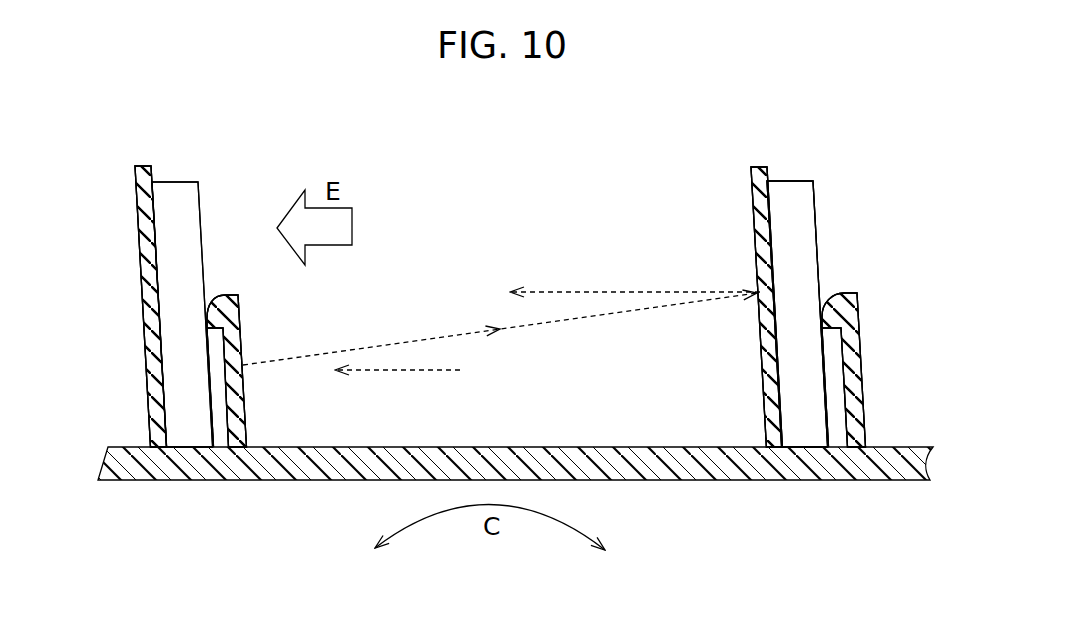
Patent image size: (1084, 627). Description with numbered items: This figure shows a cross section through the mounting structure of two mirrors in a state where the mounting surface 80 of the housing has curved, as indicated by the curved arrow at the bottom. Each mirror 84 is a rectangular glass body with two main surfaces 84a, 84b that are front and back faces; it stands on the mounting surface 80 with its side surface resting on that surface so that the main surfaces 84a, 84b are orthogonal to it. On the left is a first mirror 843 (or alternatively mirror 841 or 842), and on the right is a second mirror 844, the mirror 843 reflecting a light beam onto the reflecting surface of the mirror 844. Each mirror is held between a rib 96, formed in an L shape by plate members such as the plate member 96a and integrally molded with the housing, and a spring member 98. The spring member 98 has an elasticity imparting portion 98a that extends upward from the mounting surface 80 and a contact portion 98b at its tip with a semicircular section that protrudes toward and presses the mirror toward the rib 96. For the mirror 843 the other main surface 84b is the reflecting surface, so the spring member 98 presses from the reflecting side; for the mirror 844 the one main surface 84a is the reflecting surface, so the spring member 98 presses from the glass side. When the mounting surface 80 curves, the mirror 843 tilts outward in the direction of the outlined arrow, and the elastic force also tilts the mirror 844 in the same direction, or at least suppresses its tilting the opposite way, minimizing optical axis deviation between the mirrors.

The mounting surface 80 is at (468, 445).
The mirror 84 is at (753, 196).
The one main surface 84a is at (137, 193).
The other main surface 84b is at (201, 200).
The mirror 841 is at (215, 274).
The mirror 842 is at (222, 128).
The mirror 843 is at (215, 274).
The mirror 844 is at (795, 193).
The rib 96 is at (141, 281).
The plate member 96a is at (146, 347).
The spring member 98 is at (243, 331).
The elasticity imparting portion 98a is at (247, 434).
The contact portion 98b is at (205, 313).